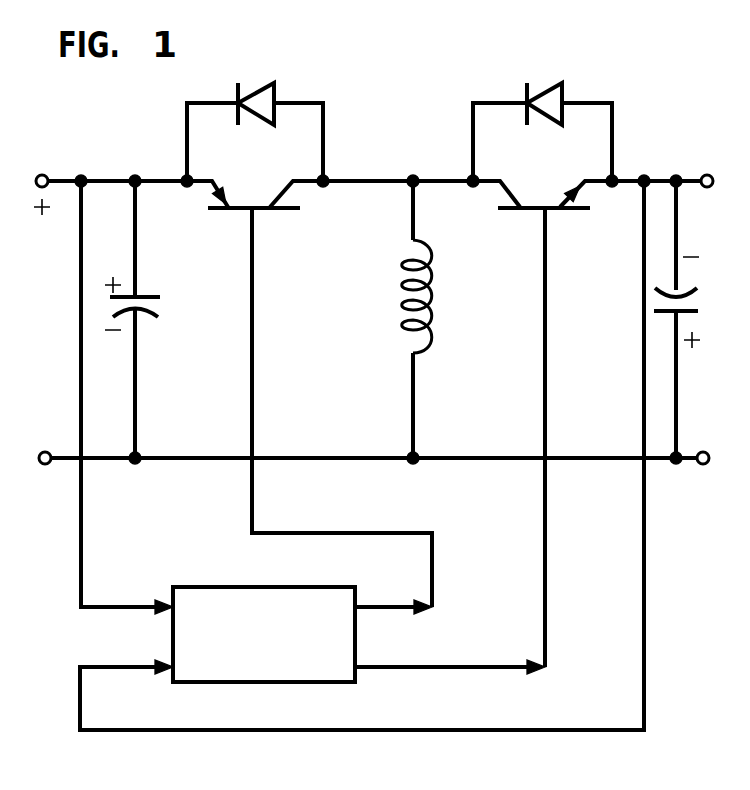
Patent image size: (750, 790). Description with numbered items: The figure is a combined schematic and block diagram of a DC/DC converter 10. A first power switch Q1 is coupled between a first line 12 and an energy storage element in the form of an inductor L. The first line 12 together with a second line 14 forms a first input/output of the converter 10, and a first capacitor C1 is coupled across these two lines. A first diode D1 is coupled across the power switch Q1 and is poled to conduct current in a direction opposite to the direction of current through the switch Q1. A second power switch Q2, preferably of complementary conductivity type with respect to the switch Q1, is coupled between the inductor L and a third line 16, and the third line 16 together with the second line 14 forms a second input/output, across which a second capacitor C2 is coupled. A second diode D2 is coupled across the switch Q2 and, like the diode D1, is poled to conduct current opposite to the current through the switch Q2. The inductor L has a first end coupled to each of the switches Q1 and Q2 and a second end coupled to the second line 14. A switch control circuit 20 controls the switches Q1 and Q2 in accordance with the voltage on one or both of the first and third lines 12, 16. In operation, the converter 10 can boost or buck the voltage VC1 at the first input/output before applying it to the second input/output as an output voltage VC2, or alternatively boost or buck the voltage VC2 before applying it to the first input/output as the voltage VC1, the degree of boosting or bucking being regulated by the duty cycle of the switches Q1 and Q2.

The DC/DC converter 10 is at (373, 160).
The first line 12 is at (158, 178).
The second line 14 is at (160, 456).
The third line 16 is at (630, 179).
The switch control circuit 20 is at (242, 586).
The first diode D1 is at (278, 96).
The second diode D2 is at (563, 98).
The first power switch Q1 is at (285, 210).
The second power switch Q2 is at (575, 210).
The inductor L is at (430, 320).
The first capacitor C1 is at (152, 312).
The second capacitor C2 is at (686, 291).
The voltage at first input/output VC1 is at (40, 321).
The voltage at second input/output VC2 is at (720, 309).